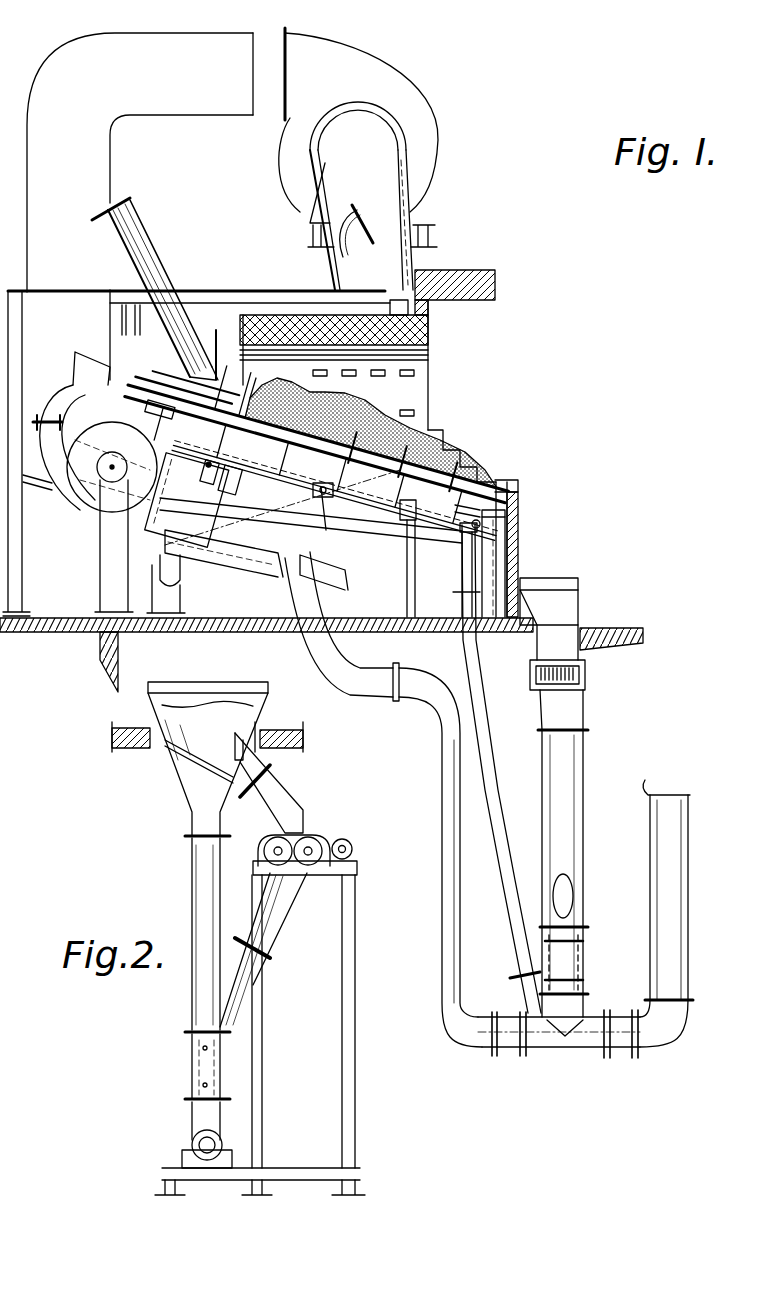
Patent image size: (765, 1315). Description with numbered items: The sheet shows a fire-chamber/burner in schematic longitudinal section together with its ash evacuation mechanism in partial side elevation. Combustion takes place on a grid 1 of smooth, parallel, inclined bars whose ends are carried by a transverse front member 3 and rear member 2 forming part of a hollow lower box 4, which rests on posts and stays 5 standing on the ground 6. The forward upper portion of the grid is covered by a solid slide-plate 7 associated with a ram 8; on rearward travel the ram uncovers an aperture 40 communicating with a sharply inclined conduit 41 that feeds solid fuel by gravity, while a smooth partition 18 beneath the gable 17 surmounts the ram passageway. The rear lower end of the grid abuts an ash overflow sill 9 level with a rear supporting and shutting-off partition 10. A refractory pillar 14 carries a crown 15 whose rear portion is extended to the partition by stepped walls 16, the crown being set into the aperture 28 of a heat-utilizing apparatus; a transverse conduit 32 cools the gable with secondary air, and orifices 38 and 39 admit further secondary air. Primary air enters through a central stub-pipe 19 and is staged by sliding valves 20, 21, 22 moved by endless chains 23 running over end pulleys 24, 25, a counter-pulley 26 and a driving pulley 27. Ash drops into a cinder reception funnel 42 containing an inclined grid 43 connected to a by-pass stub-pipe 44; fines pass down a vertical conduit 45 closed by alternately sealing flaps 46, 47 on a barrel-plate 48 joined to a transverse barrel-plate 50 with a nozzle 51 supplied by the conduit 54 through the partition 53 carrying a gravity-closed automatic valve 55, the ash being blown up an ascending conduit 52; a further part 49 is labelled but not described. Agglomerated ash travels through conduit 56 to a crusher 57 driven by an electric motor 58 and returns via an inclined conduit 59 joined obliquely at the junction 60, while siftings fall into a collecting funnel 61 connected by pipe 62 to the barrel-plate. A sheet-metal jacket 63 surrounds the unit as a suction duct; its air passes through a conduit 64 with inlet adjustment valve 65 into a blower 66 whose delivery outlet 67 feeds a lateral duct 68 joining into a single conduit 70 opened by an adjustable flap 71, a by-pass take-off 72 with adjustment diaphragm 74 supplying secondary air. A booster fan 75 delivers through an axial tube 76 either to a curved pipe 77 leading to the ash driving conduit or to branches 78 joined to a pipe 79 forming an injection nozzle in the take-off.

In FIG. 1, the grid 1 is at (315, 450).
In FIG. 1, the transverse rear member 2 is at (500, 480).
In FIG. 1, the transverse front member 3 is at (233, 391).
In FIG. 1, the lower box 4 is at (331, 412).
In FIG. 1, the posts and stays 5 is at (410, 590).
In FIG. 1, the ground 6 is at (345, 628).
In FIG. 1, the solid slide-plate 7 is at (319, 433).
In FIG. 1, the ram 8 is at (221, 477).
In FIG. 1, the ash overflow sill 9 is at (512, 482).
In FIG. 1, the rear supporting and shutting-off partition 10 is at (515, 548).
In FIG. 1, the pillar 14 is at (430, 388).
In FIG. 1, the crown 15 is at (440, 330).
In FIG. 1, the stepped walls 16 is at (470, 455).
In FIG. 1, the gable 17 is at (244, 325).
In FIG. 1, the smooth partition 18 is at (270, 378).
In FIG. 1, the central stub-pipe 19 is at (334, 491).
In FIG. 1, the sliding valve 20 is at (352, 447).
In FIG. 1, the sliding valve 21 is at (402, 461).
In FIG. 1, the sliding valve 22 is at (453, 476).
In FIG. 1, the lateral actuating endless chains 23 is at (252, 520).
In FIG. 1, the end pulley 24 is at (470, 515).
In FIG. 1, the end pulley 25 is at (170, 418).
In FIG. 1, the counter-pulley 26 is at (327, 508).
In FIG. 1, the driving pulley 27 is at (178, 570).
In FIG. 1, the aperture 28 is at (438, 316).
In FIG. 1, the transverse conduit 32 is at (216, 325).
In FIG. 1, the orifice 38 is at (428, 372).
In FIG. 1, the orifice 39 is at (425, 413).
In FIG. 1, the aperture 40 is at (194, 305).
In FIG. 1, the conduit 41 is at (155, 252).
In FIG. 1, the cinder reception funnel 42 is at (565, 578).
In FIG. 2, the cinder reception funnel 42 is at (220, 688).
In FIG. 2, the grid 43 is at (200, 765).
In FIG. 1, the by-pass stub-pipe 44 is at (590, 688).
In FIG. 2, the by-pass stub-pipe 44 is at (255, 768).
In FIG. 1, the vertical conduit 45 is at (578, 858).
In FIG. 2, the vertical conduit 45 is at (198, 878).
In FIG. 1, the flap 46 is at (585, 925).
In FIG. 2, the flap 46 is at (200, 1042).
In FIG. 1, the flap 47 is at (585, 975).
In FIG. 2, the flap 47 is at (200, 1088).
In FIG. 2, the barrel-plate 48 is at (190, 1068).
In FIG. 2, the pipe lower end 49 is at (200, 1112).
In FIG. 1, the transverse barrel-plate 50 is at (592, 1022).
In FIG. 2, the transverse barrel-plate 50 is at (222, 1135).
In FIG. 1, the nozzle 51 is at (558, 1052).
In FIG. 2, the nozzle 51 is at (225, 1148).
In FIG. 1, the ascending conduit 52 is at (666, 898).
In FIG. 1, the partition 53 is at (480, 1010).
In FIG. 1, the conduit 54 is at (440, 795).
In FIG. 1, the gravity-closed automatic valve 55 is at (512, 1052).
In FIG. 2, the conduit 56 is at (295, 802).
In FIG. 2, the crusher 57 is at (315, 836).
In FIG. 2, the electric motor 58 is at (350, 845).
In FIG. 2, the inclined conduit 59 is at (290, 925).
In FIG. 1, the oblique junction 60 is at (578, 892).
In FIG. 2, the oblique junction 60 is at (228, 1000).
In FIG. 1, the collecting funnel 61 is at (508, 514).
In FIG. 1, the pipe 62 is at (505, 860).
In FIG. 1, the sheet-metal jacket 63 is at (278, 290).
In FIG. 1, the conduit 64 is at (395, 222).
In FIG. 1, the inlet adjustment valve 65 is at (368, 212).
In FIG. 1, the blower 66 is at (412, 100).
In FIG. 1, the delivery outlet 67 is at (292, 60).
In FIG. 1, the lateral duct 68 is at (190, 45).
In FIG. 1, the single conduit 70 is at (187, 500).
In FIG. 1, the adjustable flap 71 is at (308, 465).
In FIG. 1, the by-pass take-off 72 is at (90, 360).
In FIG. 1, the adjustment diaphragm 74 is at (196, 383).
In FIG. 1, the booster fan 75 is at (90, 505).
In FIG. 1, the axial tube 76 is at (242, 575).
In FIG. 1, the curved pipe 77 is at (352, 665).
In FIG. 1, the branches 78 is at (350, 577).
In FIG. 1, the pipe 79 is at (50, 492).